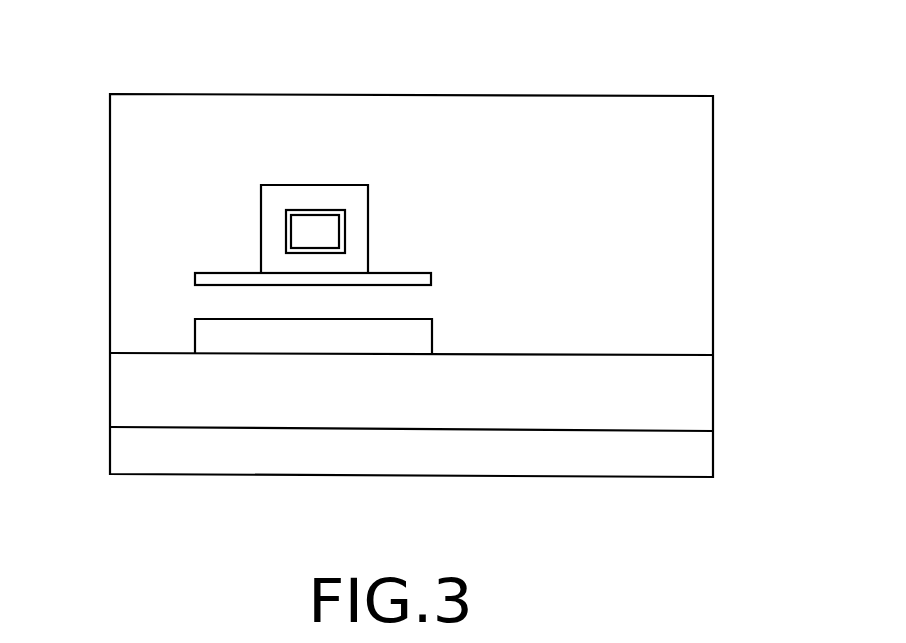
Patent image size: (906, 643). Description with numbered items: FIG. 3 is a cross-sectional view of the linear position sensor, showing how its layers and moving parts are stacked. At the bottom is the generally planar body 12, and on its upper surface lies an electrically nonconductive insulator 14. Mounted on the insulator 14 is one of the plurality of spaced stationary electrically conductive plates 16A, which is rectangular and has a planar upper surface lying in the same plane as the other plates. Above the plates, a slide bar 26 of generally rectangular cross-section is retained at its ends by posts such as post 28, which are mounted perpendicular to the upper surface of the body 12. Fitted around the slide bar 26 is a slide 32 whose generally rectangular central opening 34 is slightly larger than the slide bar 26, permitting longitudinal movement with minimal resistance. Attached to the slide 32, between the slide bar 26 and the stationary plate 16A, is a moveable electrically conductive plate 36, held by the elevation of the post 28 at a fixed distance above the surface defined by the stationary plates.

The body 12 is at (698, 454).
The insulator 14 is at (698, 393).
The electrically conductive plate 16A is at (250, 342).
The slide bar 26 is at (315, 218).
The post 28 is at (713, 167).
The slide 32 is at (348, 186).
The central opening 34 is at (286, 230).
The moveable electrically conductive plate 36 is at (425, 272).